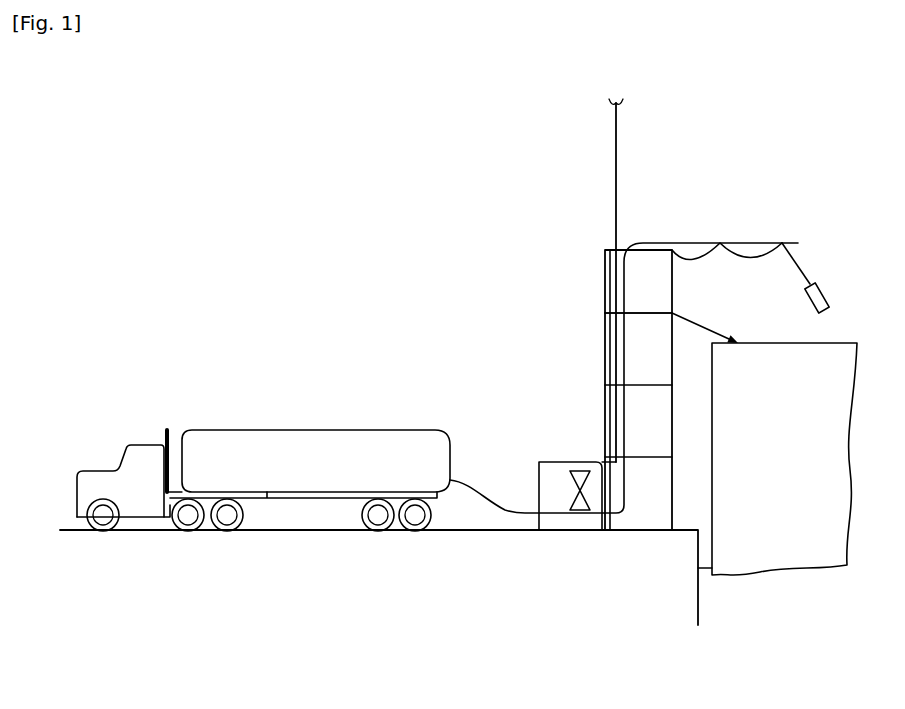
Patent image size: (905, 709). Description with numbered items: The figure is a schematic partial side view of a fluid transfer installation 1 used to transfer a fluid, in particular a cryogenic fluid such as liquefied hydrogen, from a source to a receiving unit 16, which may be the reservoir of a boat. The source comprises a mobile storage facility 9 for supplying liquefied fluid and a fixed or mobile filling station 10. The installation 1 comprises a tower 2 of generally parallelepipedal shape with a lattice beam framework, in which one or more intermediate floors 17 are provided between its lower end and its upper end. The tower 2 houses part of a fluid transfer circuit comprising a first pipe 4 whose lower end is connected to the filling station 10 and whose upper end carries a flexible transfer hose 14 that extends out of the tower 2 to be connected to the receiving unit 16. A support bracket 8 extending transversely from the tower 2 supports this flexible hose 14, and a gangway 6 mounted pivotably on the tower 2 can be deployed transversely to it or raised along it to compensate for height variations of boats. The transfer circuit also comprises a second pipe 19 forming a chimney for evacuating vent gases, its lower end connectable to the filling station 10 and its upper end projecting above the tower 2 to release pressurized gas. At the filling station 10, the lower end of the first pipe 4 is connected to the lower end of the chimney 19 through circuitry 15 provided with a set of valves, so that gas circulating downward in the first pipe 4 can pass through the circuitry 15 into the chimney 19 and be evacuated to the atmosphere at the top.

The fluid transfer installation 1 is at (626, 596).
The tower 2 is at (605, 275).
The first pipe 4 is at (642, 480).
The gangway 6 is at (733, 356).
The support bracket 8 is at (720, 233).
The mobile storage facility 9 is at (308, 478).
The filling station 10 is at (562, 512).
The flexible transfer hose 14 is at (761, 278).
The circuitry 15 is at (573, 472).
The receiving unit 16 is at (822, 527).
The intermediate floors 17 is at (638, 443).
The second pipe 19 is at (630, 135).